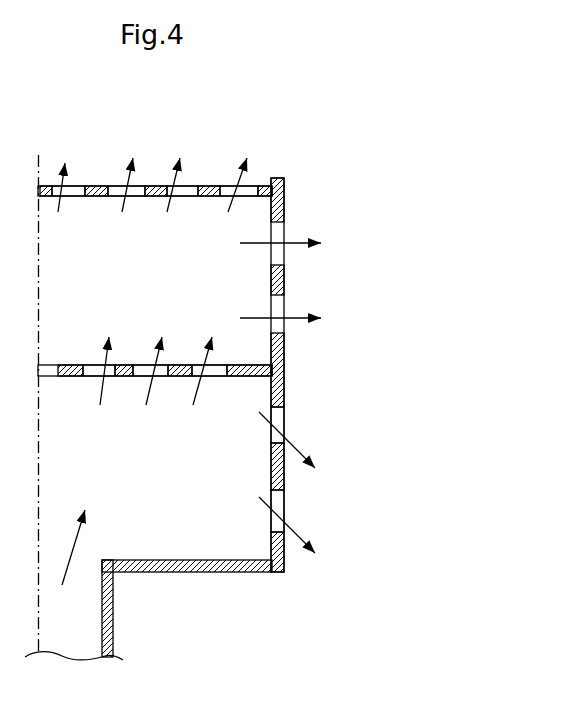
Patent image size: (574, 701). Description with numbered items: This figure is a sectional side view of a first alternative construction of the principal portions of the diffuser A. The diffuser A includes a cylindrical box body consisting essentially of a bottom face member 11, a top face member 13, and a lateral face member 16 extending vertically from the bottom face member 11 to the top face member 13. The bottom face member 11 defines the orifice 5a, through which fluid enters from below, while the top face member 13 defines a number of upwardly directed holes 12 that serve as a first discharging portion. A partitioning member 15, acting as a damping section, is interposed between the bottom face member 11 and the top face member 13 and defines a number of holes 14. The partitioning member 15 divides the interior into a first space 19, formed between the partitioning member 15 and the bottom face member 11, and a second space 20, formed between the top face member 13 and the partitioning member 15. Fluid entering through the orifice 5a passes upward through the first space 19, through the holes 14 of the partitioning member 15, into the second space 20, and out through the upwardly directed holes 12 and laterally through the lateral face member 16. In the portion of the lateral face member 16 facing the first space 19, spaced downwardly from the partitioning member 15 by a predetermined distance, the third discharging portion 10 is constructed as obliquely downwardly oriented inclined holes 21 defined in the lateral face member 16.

The orifice 5a is at (103, 572).
The third discharging portion 10 is at (358, 465).
The bottom face member 11 is at (182, 572).
The upwardly directed holes 12 is at (80, 186).
The top face member 13 is at (157, 186).
The holes 14 is at (88, 363).
The partitioning member 15 is at (130, 363).
The lateral face member 16 is at (284, 352).
The first space 19 is at (117, 459).
The second space 20 is at (185, 247).
The inclined holes 21 is at (284, 423).
The diffuser A is at (330, 195).